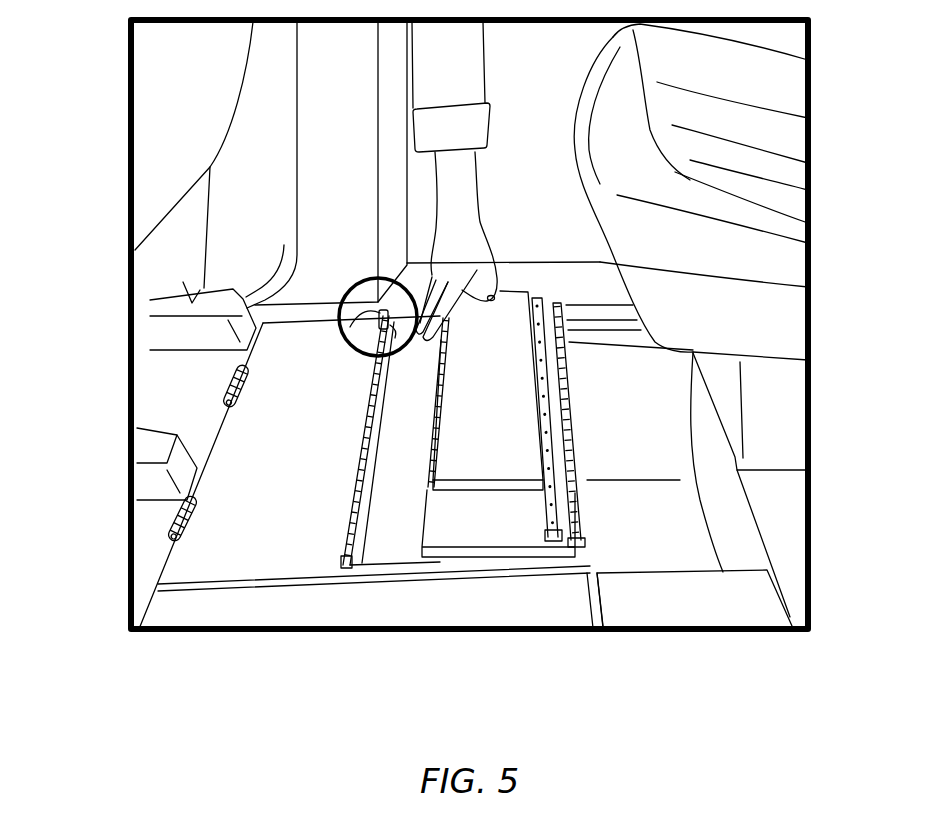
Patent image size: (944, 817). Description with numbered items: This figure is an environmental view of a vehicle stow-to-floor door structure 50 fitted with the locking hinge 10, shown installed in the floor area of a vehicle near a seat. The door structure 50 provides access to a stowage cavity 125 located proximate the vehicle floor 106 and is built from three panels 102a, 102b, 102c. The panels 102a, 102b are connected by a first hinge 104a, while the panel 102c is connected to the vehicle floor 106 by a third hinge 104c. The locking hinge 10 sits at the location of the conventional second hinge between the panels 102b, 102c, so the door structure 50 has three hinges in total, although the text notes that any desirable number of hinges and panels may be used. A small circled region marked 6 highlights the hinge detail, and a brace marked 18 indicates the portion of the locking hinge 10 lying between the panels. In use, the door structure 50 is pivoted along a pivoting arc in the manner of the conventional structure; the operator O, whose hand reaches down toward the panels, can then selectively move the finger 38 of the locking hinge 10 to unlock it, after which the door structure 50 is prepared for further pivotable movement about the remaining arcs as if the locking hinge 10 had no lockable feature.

The third hinge 104c is at (167, 527).
The vehicle stow-to-floor door structure 50 is at (393, 262).
The detail region of FIG. 6 is at (357, 283).
The operator O is at (473, 193).
The finger 38 is at (353, 323).
The hinge gap 18 is at (386, 424).
The panel 102c is at (291, 478).
The locking hinge 10 is at (343, 543).
The panel 102b is at (400, 578).
The first hinge 104a is at (575, 395).
The stowage cavity 125 is at (657, 517).
The vehicle floor 106 is at (342, 610).
The panel 102a is at (487, 527).